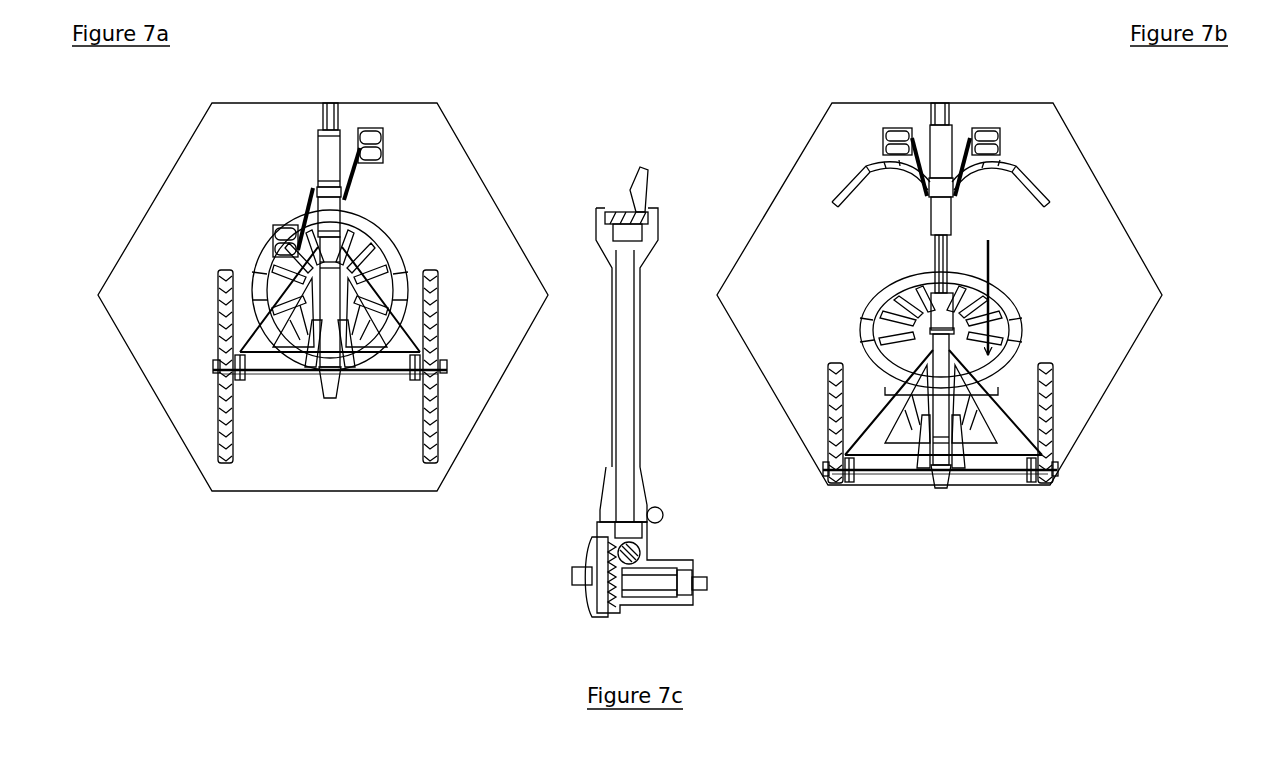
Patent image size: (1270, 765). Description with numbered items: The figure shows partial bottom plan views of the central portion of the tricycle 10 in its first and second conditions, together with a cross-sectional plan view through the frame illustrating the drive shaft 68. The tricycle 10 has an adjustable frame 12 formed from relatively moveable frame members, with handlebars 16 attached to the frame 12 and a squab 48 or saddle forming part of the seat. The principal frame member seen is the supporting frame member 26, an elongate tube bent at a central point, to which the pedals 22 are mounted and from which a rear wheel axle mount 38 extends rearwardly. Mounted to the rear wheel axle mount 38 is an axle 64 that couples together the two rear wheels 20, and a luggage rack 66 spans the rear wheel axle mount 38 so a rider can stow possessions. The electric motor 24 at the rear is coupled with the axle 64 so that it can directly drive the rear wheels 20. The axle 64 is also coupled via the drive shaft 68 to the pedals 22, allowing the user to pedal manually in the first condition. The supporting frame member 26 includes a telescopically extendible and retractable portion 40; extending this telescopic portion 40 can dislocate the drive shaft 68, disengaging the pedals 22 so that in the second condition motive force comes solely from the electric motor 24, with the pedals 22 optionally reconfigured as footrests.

In FIG. 7A, the tricycle 10 is at (107, 191).
In FIG. 7C, the tricycle 10 is at (585, 191).
In FIG. 7B, the tricycle 10 is at (1191, 204).
In FIG. 7A, the adjustable frame 12 is at (235, 150).
In FIG. 7B, the adjustable frame 12 is at (867, 112).
In FIG. 7B, the handlebars 16 is at (839, 196).
In FIG. 7A, the rear wheels 20 is at (437, 410).
In FIG. 7B, the rear wheels 20 is at (1056, 395).
In FIG. 7A, the pedals 22 is at (380, 164).
In FIG. 7B, the pedals 22 is at (879, 145).
In FIG. 7A, the electric motor 24 is at (344, 338).
In FIG. 7C, the electric motor 24 is at (603, 586).
In FIG. 7B, the electric motor 24 is at (918, 473).
In FIG. 7A, the supporting frame member 26 is at (331, 102).
In FIG. 7C, the supporting frame member 26 is at (637, 337).
In FIG. 7B, the supporting frame member 26 is at (941, 102).
In FIG. 7A, the rear wheel axle mount 38 is at (262, 325).
In FIG. 7B, the rear wheel axle mount 38 is at (943, 402).
In FIG. 7B, the telescopically extendible and retractable portion 40 is at (939, 275).
In FIG. 7A, the squab 48 is at (406, 250).
In FIG. 7B, the squab 48 is at (979, 290).
In FIG. 7A, the axle 64 is at (419, 355).
In FIG. 7C, the axle 64 is at (711, 584).
In FIG. 7B, the axle 64 is at (1036, 465).
In FIG. 7A, the luggage rack 66 is at (284, 360).
In FIG. 7B, the luggage rack 66 is at (981, 476).
In FIG. 7C, the drive shaft 68 is at (625, 420).